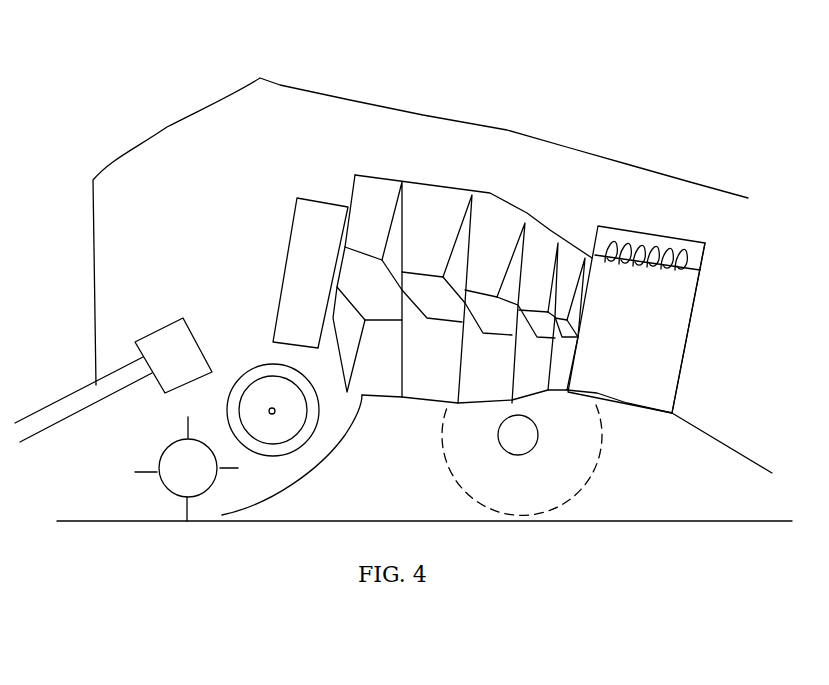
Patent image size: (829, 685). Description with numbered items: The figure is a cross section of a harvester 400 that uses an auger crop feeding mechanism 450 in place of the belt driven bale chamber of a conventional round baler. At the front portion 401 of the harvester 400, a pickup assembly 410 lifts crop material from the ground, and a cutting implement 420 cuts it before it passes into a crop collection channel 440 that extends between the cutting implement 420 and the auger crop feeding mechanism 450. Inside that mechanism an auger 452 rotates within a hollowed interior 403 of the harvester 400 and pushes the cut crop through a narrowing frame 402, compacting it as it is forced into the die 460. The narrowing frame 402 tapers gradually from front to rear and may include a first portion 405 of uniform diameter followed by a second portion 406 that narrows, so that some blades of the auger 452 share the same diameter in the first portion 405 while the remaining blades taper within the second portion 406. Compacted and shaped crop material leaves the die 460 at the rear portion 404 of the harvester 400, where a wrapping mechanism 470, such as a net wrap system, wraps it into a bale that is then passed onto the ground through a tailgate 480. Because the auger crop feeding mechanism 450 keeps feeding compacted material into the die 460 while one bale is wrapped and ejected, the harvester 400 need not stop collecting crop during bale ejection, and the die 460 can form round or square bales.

The harvester 400 is at (512, 124).
The front portion 401 is at (112, 543).
The narrowing frame 402 is at (512, 200).
The hollowed interior 403 is at (488, 223).
The rear portion 404 is at (715, 313).
The first portion 405 is at (445, 187).
The second portion 406 is at (550, 230).
The pickup assembly 410 is at (183, 477).
The cutting implement 420 is at (271, 408).
The crop collection channel 440 is at (288, 495).
The auger crop feeding mechanism 450 is at (385, 178).
The auger 452 is at (430, 300).
The die 460 is at (632, 407).
The wrapping mechanism 470 is at (647, 232).
The tailgate 480 is at (753, 467).